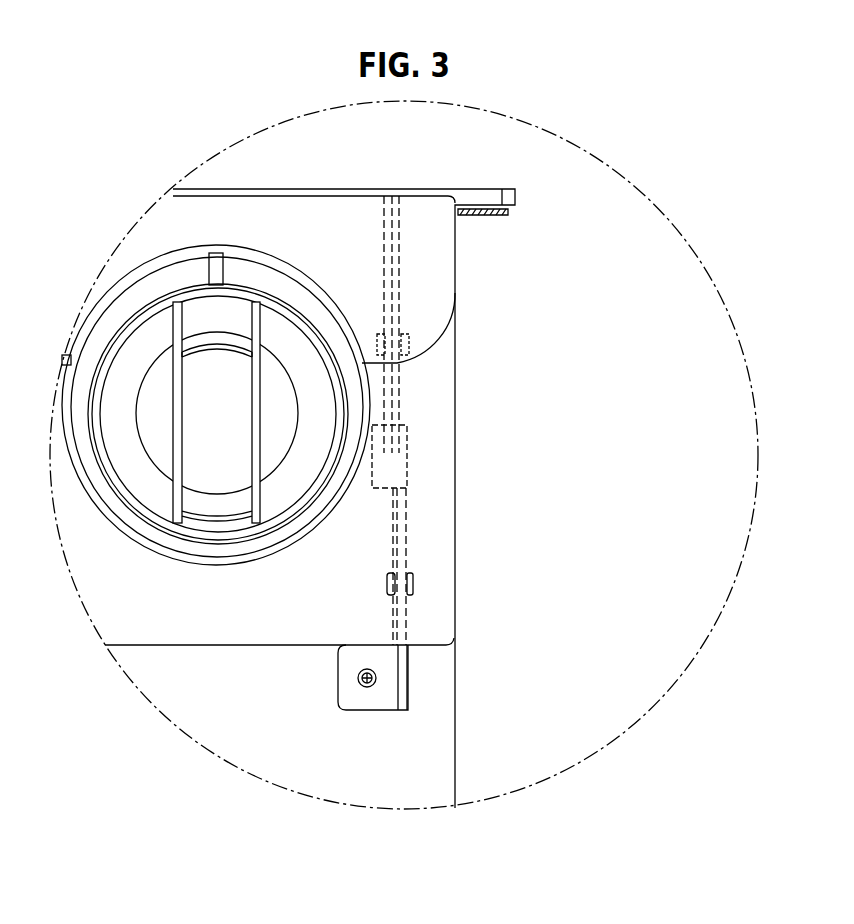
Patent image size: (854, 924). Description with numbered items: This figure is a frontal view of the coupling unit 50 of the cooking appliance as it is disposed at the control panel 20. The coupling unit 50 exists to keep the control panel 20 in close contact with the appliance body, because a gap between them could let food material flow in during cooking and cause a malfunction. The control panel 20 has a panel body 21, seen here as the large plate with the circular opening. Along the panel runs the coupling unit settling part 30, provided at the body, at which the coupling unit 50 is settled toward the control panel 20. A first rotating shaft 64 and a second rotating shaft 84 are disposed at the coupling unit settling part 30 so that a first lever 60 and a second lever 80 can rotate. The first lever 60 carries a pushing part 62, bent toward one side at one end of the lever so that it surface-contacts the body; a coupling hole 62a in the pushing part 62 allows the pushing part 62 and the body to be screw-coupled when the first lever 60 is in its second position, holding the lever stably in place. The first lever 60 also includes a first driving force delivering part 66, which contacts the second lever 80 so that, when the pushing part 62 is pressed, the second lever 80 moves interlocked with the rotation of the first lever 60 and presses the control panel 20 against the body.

The control panel 20 is at (305, 498).
The panel body 21 is at (446, 405).
The coupling unit settling part 30 is at (399, 268).
The coupling unit 50 is at (488, 488).
The first lever 60 is at (476, 603).
The pushing part 62 is at (426, 713).
The coupling hole 62a is at (368, 688).
The first rotating shaft 64 is at (413, 583).
The first driving force delivering part 66 is at (403, 452).
The second lever 80 is at (487, 294).
The second rotating shaft 84 is at (406, 344).